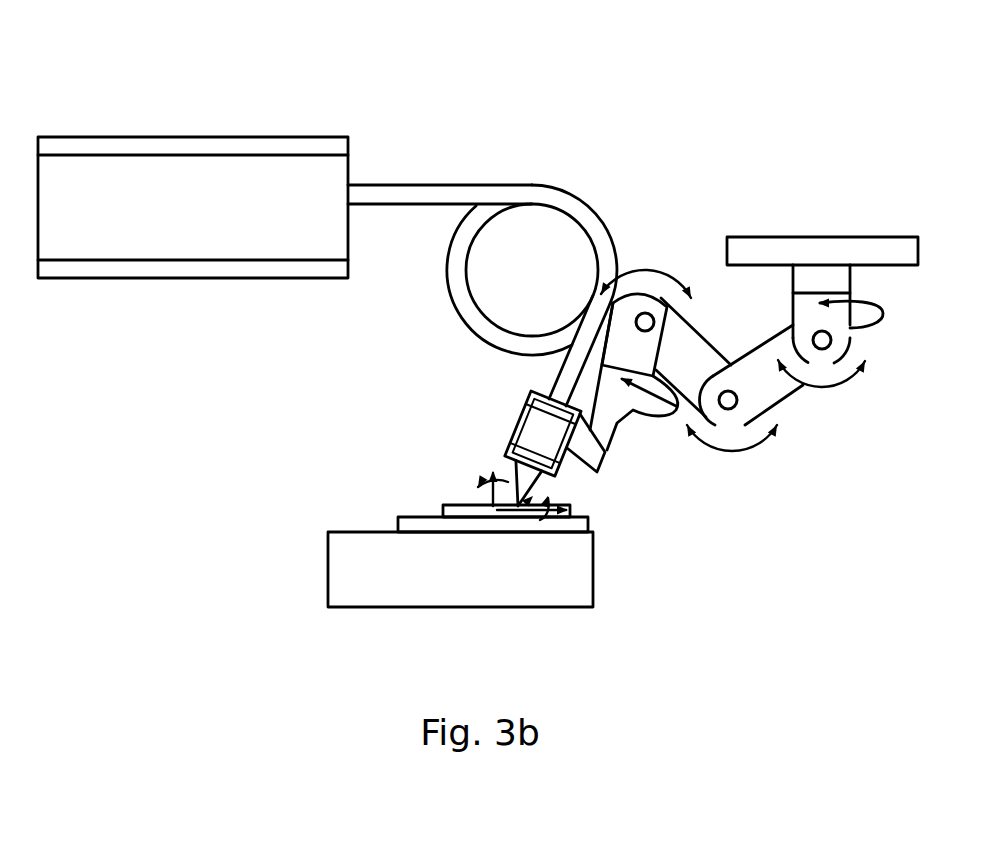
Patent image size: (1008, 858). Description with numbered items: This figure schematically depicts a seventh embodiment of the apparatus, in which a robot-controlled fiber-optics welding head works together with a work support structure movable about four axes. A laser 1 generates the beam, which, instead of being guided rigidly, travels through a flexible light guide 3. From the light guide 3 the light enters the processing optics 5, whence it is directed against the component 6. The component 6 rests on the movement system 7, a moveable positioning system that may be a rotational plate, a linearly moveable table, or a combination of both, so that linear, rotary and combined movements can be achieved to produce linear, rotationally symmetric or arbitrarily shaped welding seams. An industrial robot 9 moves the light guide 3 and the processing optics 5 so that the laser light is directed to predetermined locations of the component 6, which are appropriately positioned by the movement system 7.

The laser 1 is at (193, 125).
The flexible light guide 3 is at (531, 172).
The processing optics 5 is at (497, 434).
The component 6 is at (433, 510).
The movement system 7 is at (313, 567).
The industrial robot 9 is at (826, 228).